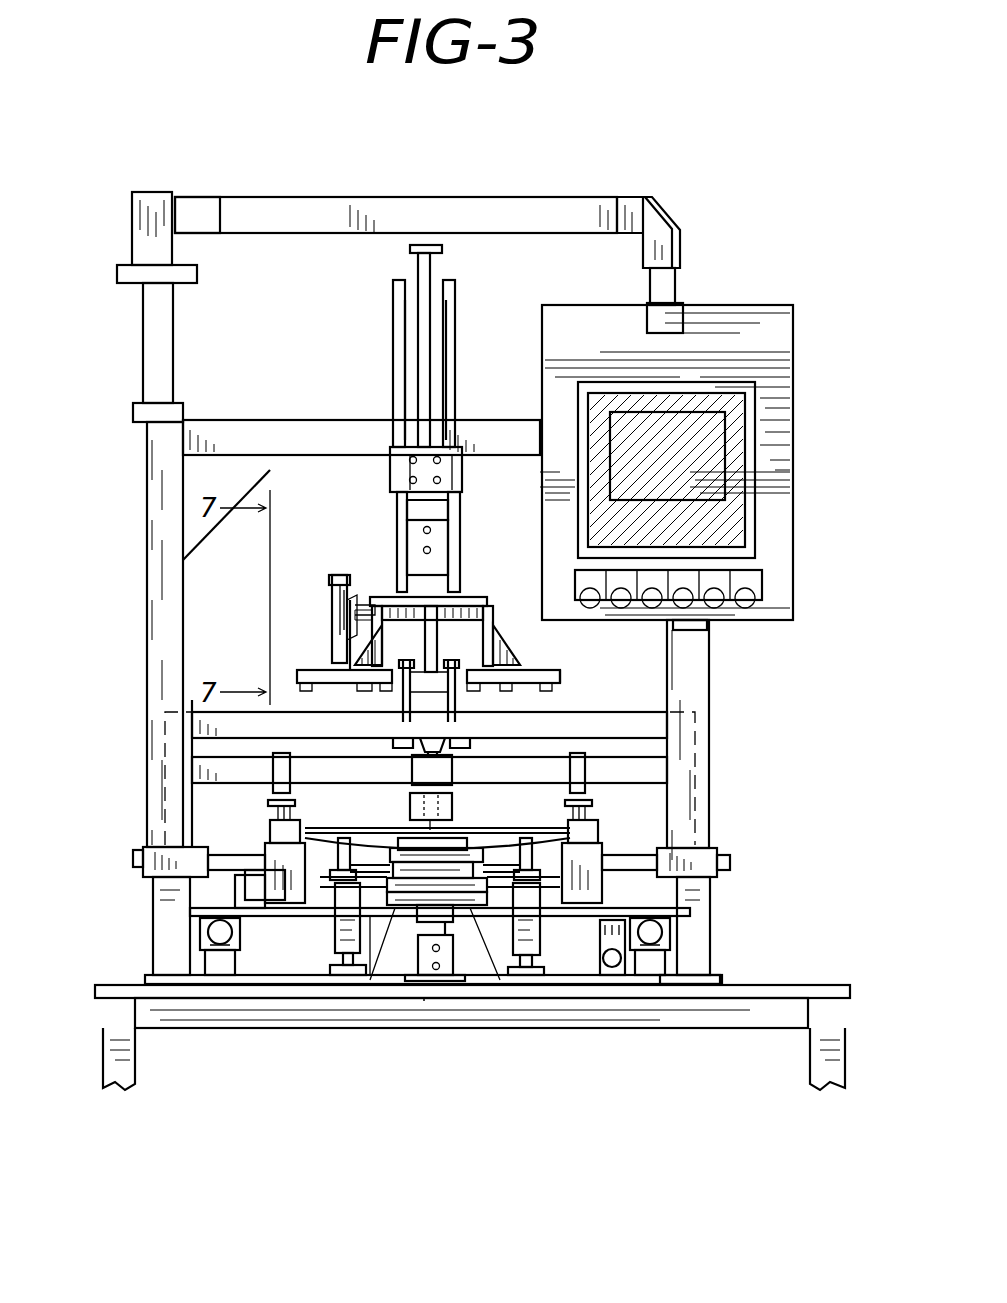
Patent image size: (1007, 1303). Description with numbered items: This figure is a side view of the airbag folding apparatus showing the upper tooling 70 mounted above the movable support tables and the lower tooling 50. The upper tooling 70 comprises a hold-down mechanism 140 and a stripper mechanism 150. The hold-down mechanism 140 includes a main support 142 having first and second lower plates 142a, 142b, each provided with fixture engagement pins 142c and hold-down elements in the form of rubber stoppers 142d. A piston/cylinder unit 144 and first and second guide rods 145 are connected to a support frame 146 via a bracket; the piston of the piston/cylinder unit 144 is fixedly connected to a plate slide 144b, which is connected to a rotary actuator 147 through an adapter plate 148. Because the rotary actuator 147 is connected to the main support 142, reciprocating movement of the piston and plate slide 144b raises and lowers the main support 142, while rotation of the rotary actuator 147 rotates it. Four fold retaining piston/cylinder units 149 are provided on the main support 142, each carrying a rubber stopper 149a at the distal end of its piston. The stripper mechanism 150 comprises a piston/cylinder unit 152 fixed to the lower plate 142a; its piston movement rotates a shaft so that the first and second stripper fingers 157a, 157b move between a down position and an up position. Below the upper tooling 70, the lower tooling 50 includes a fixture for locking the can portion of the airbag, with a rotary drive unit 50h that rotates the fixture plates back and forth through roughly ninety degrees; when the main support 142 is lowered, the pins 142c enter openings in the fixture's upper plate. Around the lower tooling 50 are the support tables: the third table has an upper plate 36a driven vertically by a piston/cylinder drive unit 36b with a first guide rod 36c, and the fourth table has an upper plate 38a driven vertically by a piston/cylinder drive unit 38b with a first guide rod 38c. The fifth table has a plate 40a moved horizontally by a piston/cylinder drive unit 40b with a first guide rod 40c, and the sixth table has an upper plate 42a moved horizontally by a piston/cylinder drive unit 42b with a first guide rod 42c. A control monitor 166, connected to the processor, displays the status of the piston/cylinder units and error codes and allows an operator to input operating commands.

The upper tooling 70 is at (250, 590).
The piston/cylinder unit 144 is at (432, 300).
The first and second guide rods 145 is at (400, 332).
The plate slide 144b is at (425, 470).
The support frame 146 is at (278, 437).
The rotary actuator 147 is at (437, 535).
The adapter plate 148 is at (437, 510).
The fold retaining piston/cylinder units 149 is at (452, 560).
The rubber stopper 149a is at (425, 596).
The stripper mechanism 150 is at (460, 640).
The piston/cylinder unit 152 is at (333, 640).
The hold-down mechanism 140 is at (552, 670).
The main support 142 is at (518, 658).
The first lower plate 142a is at (335, 668).
The second lower plate 142b is at (565, 678).
The fixture engagement pins 142c is at (395, 742).
The rubber stoppers 142d is at (300, 680).
The first stripper finger 157a is at (400, 703).
The second stripper finger 157b is at (458, 705).
The control monitor 166 is at (778, 440).
The upper plate 38a is at (402, 826).
The upper plate 36a is at (458, 831).
The lower tooling 50 is at (463, 940).
The rotary drive unit 50h is at (430, 950).
The first guide rod 38c is at (335, 885).
The piston/cylinder drive unit 38b is at (325, 878).
The first guide rod 36c is at (535, 880).
The piston/cylinder drive unit 36b is at (545, 880).
The upper plate 42a is at (280, 835).
The piston/cylinder drive unit 42b is at (136, 855).
The first guide rod 42c is at (150, 847).
The plate 40a is at (590, 835).
The piston/cylinder drive unit 40b is at (722, 856).
The first guide rod 40c is at (665, 848).